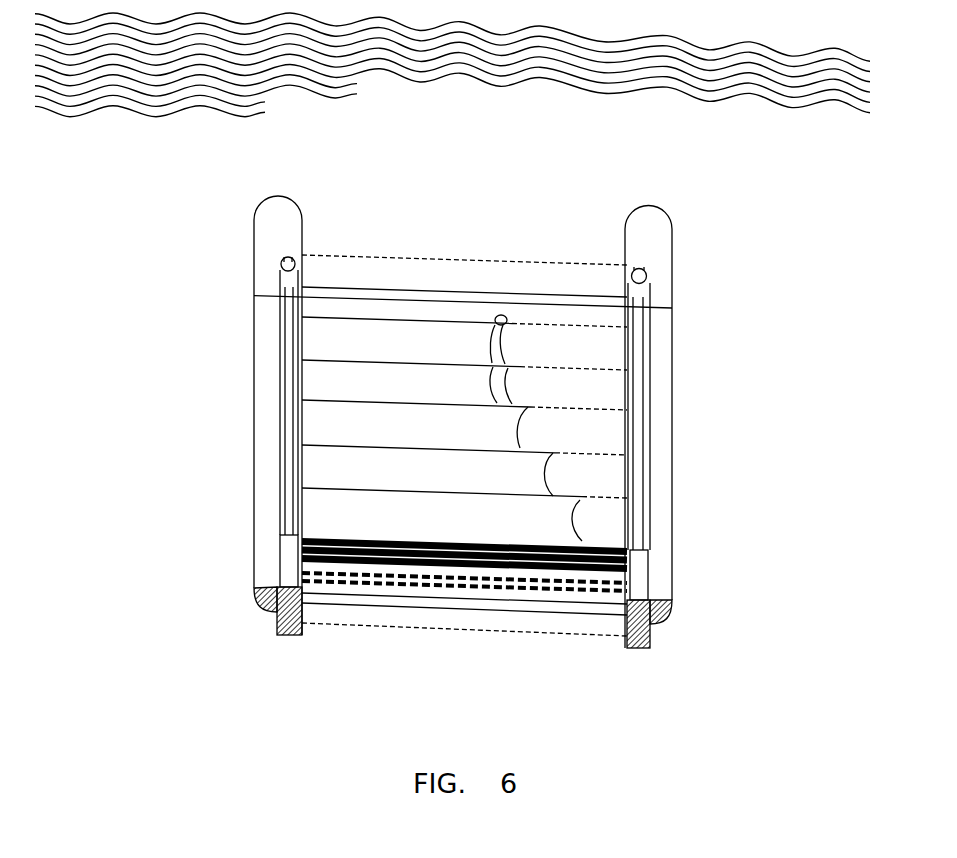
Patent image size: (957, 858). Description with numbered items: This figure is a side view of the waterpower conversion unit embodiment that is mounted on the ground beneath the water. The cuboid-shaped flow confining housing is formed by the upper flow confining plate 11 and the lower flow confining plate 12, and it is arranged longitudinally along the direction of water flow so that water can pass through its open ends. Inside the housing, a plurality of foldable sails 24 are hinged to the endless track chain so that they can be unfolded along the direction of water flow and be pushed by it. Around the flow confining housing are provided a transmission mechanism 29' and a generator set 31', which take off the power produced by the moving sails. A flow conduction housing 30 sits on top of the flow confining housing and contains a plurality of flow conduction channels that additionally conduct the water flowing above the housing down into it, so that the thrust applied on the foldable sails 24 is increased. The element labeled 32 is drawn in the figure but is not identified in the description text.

The upper flow confining plate 11 is at (417, 600).
The lower flow confining plate 12 is at (353, 293).
The foldable sail 24 is at (338, 477).
The transmission mechanism 29' is at (708, 259).
The flow conduction housing 30 is at (428, 275).
The generator set 31' is at (701, 369).
The post 32 is at (640, 228).